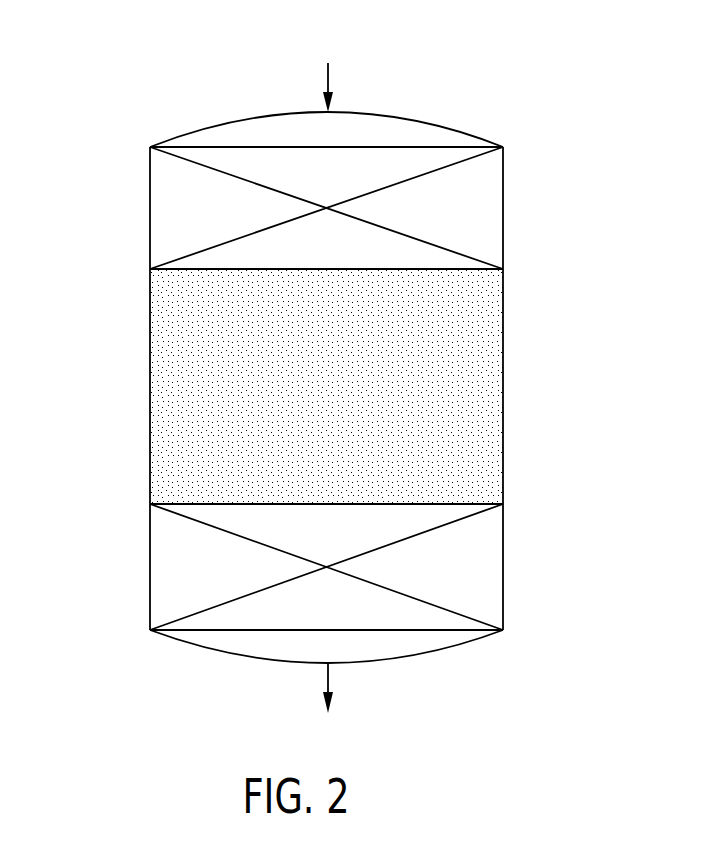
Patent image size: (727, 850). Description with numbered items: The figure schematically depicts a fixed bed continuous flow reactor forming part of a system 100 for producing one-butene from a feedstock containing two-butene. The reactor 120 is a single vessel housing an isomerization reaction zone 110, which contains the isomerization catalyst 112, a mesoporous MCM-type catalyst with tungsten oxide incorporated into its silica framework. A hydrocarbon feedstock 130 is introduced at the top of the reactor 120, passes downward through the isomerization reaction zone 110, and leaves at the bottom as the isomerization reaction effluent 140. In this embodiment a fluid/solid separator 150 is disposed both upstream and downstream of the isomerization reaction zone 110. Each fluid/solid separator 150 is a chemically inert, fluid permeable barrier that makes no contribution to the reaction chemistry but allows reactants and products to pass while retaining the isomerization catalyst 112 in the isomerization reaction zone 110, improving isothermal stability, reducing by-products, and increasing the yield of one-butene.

The system 100 is at (124, 96).
The isomerization reaction zone 110 is at (160, 401).
The isomerization catalyst 112 is at (497, 401).
The reactor 120 is at (247, 118).
The feedstock 130 is at (331, 86).
The isomerization reaction effluent 140 is at (331, 680).
The fluid/solid separator 150 is at (157, 200).